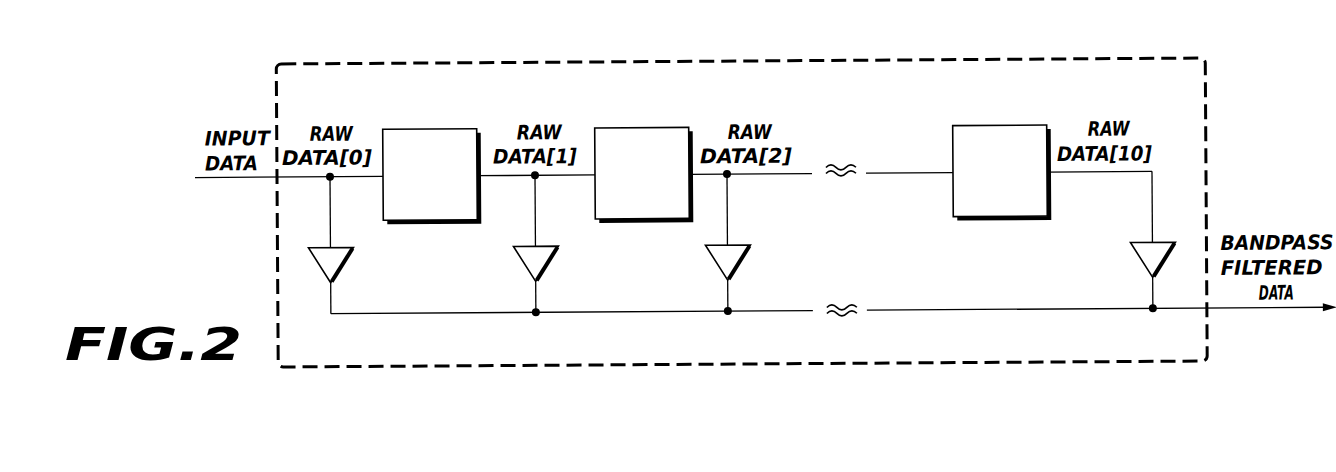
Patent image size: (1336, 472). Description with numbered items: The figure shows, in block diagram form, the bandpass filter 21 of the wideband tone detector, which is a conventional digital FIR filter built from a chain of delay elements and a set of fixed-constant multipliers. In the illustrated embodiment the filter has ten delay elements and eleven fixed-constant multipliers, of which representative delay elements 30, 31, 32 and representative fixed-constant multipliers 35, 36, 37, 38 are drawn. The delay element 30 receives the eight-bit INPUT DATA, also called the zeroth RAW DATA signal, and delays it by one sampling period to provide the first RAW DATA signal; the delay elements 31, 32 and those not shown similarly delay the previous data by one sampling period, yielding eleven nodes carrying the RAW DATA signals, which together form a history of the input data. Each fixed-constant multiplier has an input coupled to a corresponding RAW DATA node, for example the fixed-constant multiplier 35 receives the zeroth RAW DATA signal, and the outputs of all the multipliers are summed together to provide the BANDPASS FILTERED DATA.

The bandpass filter 21 is at (276, 250).
The delay element 30 is at (435, 130).
The delay element 31 is at (650, 130).
The delay element 32 is at (1007, 130).
The fixed-constant multiplier 35 is at (343, 270).
The fixed-constant multiplier 36 is at (549, 268).
The fixed-constant multiplier 37 is at (741, 268).
The fixed-constant multiplier 38 is at (1140, 267).